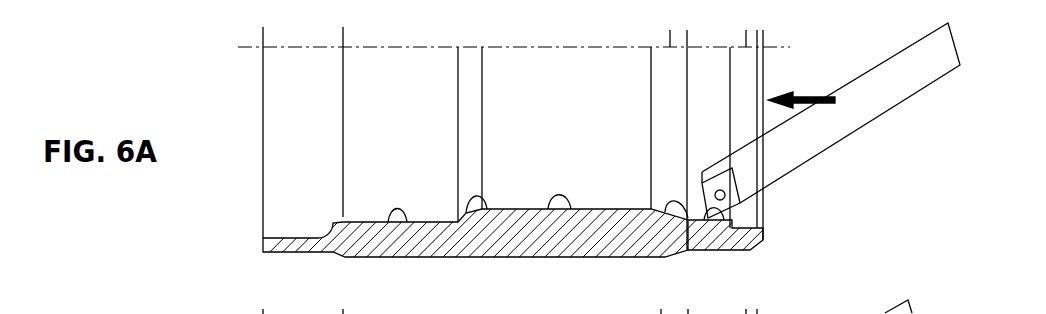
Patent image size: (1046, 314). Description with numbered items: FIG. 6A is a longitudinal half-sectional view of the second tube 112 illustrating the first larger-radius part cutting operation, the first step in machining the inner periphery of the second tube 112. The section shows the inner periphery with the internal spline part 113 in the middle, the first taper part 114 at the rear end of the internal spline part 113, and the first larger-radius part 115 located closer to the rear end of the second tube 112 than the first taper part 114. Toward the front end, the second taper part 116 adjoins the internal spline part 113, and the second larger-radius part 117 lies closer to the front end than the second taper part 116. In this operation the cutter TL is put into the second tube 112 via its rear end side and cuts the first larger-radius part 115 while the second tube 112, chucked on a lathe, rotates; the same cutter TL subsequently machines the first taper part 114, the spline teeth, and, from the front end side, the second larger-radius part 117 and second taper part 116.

The second tube 112 is at (259, 252).
The internal spline part 113 is at (567, 207).
The first taper part 114 is at (690, 252).
The first larger-radius part 115 is at (725, 248).
The second taper part 116 is at (487, 207).
The second larger-radius part 117 is at (407, 222).
The cutter TL is at (843, 122).